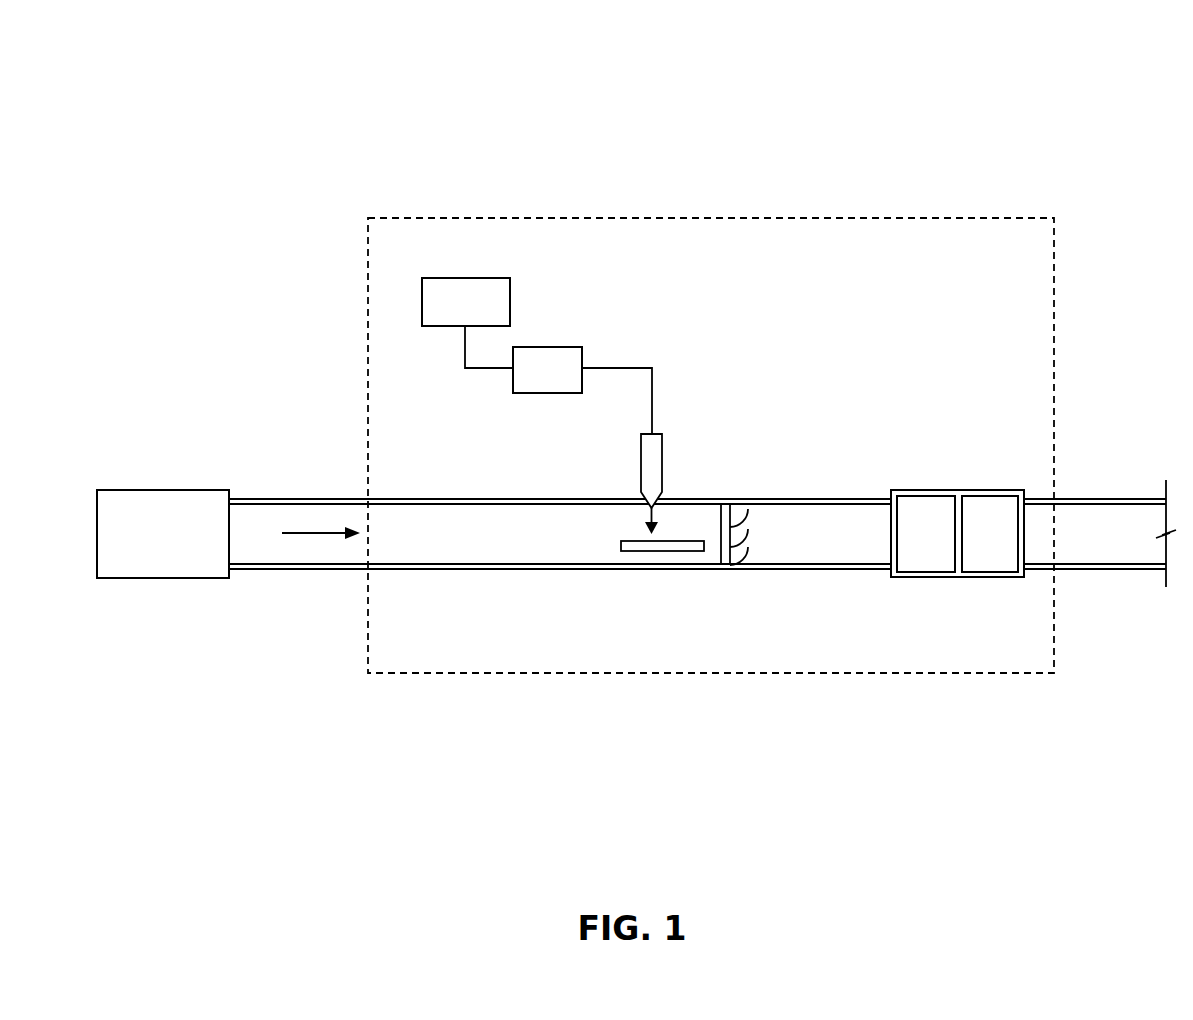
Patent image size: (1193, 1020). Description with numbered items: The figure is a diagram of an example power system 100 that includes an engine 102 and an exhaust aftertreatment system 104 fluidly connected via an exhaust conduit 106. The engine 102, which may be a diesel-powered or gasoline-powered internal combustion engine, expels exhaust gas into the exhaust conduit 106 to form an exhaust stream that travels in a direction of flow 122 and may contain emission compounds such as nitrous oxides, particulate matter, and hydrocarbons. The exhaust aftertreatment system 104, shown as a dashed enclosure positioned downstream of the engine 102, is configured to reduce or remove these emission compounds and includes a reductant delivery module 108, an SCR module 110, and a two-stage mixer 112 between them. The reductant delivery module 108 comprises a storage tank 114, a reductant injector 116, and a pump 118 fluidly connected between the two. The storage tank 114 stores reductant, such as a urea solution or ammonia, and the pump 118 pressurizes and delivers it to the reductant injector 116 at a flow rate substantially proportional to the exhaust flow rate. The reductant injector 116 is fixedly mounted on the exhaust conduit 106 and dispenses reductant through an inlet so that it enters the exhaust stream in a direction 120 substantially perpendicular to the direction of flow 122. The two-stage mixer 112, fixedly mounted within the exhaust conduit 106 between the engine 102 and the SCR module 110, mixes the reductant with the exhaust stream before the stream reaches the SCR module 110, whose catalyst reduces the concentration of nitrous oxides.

The power system 100 is at (149, 49).
The engine 102 is at (163, 534).
The exhaust aftertreatment system 104 is at (368, 331).
The exhaust conduit 106 is at (460, 570).
The reductant delivery module 108 is at (624, 331).
The SCR module 110 is at (957, 533).
The two-stage mixer 112 is at (615, 577).
The storage tank 114 is at (467, 323).
The reductant injector 116 is at (663, 458).
The pump 118 is at (582, 390).
The direction 120 is at (647, 521).
The direction of flow 122 is at (298, 535).